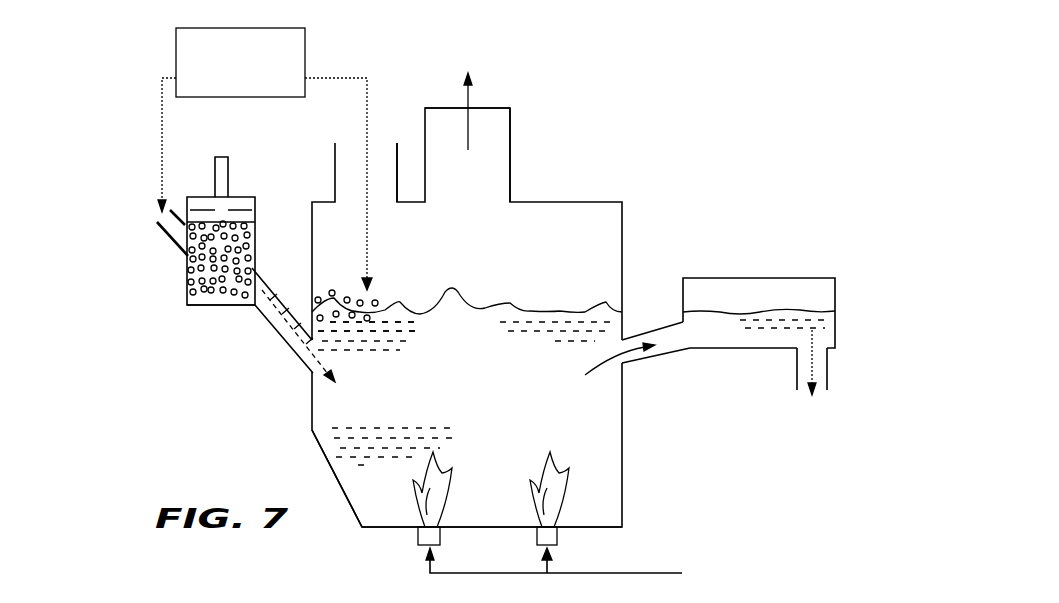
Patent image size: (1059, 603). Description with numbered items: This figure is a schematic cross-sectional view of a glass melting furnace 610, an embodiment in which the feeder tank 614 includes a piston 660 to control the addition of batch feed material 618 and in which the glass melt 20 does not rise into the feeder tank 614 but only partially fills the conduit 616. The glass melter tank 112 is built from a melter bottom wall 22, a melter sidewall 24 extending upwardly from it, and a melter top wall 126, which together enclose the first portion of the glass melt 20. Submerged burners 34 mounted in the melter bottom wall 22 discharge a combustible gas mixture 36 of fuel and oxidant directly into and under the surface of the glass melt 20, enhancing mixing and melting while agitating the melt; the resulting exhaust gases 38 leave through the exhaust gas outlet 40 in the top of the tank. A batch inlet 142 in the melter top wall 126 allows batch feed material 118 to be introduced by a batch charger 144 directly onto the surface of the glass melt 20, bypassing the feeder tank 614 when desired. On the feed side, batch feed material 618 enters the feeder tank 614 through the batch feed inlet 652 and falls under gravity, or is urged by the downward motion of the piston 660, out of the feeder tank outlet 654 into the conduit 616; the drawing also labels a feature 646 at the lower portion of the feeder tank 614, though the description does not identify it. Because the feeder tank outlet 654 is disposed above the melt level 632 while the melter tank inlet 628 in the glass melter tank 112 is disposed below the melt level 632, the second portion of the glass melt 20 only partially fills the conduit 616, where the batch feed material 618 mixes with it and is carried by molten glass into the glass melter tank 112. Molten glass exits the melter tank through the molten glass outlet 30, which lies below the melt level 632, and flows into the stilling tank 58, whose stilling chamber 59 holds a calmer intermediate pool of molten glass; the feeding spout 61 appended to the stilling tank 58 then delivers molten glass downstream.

The glass melting furnace 610 is at (686, 67).
The glass melter tank 112 is at (580, 165).
The melter sidewall 24 is at (626, 215).
The exhaust gas outlet 40 is at (512, 127).
The melter top wall 126 is at (417, 200).
The exhaust gases 38 is at (469, 85).
The melter bottom wall 22 is at (373, 528).
The glass melt 20 is at (488, 402).
The batch feed material 118 is at (366, 338).
The batch inlet 142 is at (378, 135).
The batch charger 144 is at (262, 82).
The feeder tank 614 is at (134, 289).
The hopper 646 is at (192, 307).
The piston 660 is at (228, 158).
The batch feed material 618 is at (186, 258).
The batch feed inlet 652 is at (160, 233).
The feeder tank outlet 654 is at (244, 322).
The conduit 616 is at (275, 335).
The melt level 632 is at (270, 298).
The melter tank inlet 628 is at (299, 390).
The molten glass outlet 30 is at (658, 352).
The stilling tank 58 is at (838, 292).
The stilling chamber 59 is at (792, 287).
The feeding spout 61 is at (828, 365).
The submerged burners 34 is at (537, 535).
The combustible gas mixture 36 is at (572, 569).